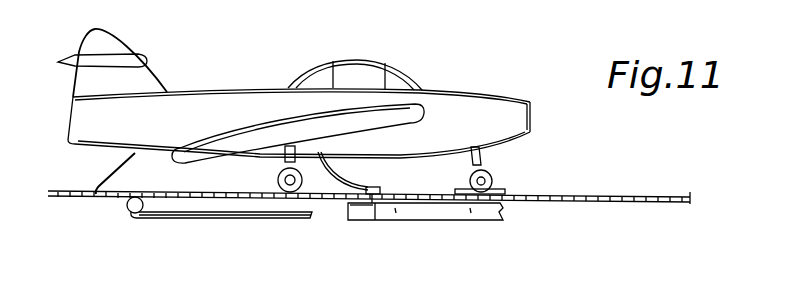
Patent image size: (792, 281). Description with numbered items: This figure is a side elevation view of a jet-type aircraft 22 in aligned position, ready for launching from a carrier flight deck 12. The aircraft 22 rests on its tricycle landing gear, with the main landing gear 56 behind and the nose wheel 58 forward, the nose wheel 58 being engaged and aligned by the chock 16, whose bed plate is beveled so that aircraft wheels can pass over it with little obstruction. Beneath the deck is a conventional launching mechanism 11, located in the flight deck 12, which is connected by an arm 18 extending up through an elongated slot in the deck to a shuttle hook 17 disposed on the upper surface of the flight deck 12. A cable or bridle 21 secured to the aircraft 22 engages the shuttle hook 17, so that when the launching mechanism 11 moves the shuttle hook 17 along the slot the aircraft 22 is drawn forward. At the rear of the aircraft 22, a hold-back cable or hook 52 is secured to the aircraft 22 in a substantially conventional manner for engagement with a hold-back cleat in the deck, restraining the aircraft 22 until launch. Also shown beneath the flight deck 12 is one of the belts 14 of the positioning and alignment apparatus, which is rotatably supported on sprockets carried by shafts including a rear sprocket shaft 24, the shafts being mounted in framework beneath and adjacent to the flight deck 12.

The launching mechanism 11 is at (424, 210).
The flight deck 12 is at (617, 200).
The belt 14 is at (222, 219).
The chock 16 is at (514, 191).
The shuttle hook 17 is at (395, 193).
The arm 18 is at (376, 208).
The cable or bridle 21 is at (364, 183).
The aircraft 22 is at (232, 98).
The rear sprocket shaft 24 is at (128, 210).
The hold-back cable and/or hook 52 is at (112, 173).
The main landing gear 56 is at (277, 180).
The nose wheel 58 is at (493, 176).